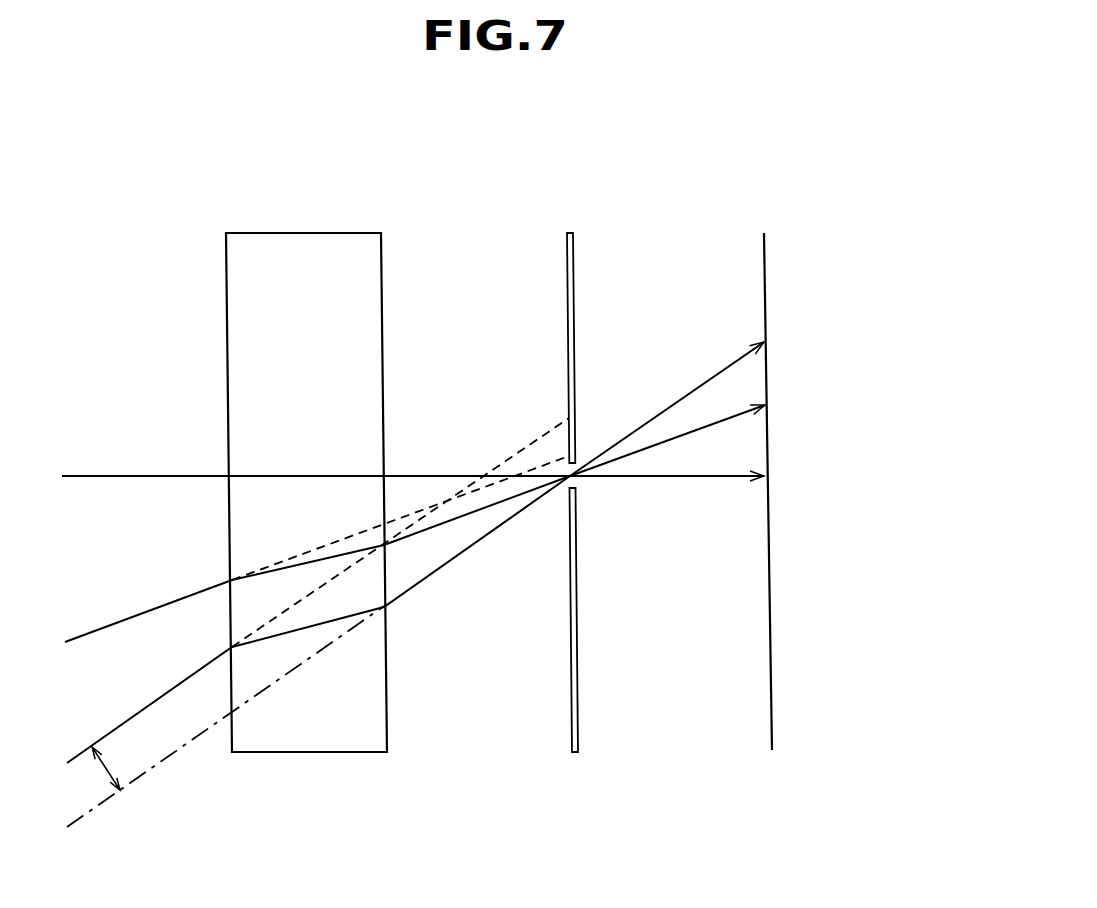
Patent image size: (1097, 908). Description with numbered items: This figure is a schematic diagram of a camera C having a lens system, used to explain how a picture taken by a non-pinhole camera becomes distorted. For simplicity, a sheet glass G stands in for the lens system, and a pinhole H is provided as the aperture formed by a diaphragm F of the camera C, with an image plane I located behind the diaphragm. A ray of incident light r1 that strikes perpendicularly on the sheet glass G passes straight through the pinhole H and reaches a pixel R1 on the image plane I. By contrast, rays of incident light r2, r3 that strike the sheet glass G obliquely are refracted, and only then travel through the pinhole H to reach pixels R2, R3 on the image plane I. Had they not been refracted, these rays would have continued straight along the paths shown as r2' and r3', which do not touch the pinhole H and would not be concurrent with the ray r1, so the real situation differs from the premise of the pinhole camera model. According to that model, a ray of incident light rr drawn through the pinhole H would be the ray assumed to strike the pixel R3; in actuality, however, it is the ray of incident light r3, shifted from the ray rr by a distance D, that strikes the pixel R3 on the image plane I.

The camera C is at (660, 145).
The sheet glass G is at (277, 753).
The diaphragm F is at (572, 722).
The pinhole H is at (583, 485).
The image plane I is at (772, 720).
The ray of incident light r1 is at (140, 475).
The ray of incident light r2 is at (317, 559).
The ray of incident light r3 is at (318, 619).
The straight path of ray r2 r2' is at (400, 518).
The straight path of ray r3 r3' is at (400, 532).
The ray of incident light rr is at (167, 753).
The distance D is at (116, 764).
The pixel R1 is at (689, 479).
The pixel R2 is at (689, 433).
The pixel R3 is at (689, 400).